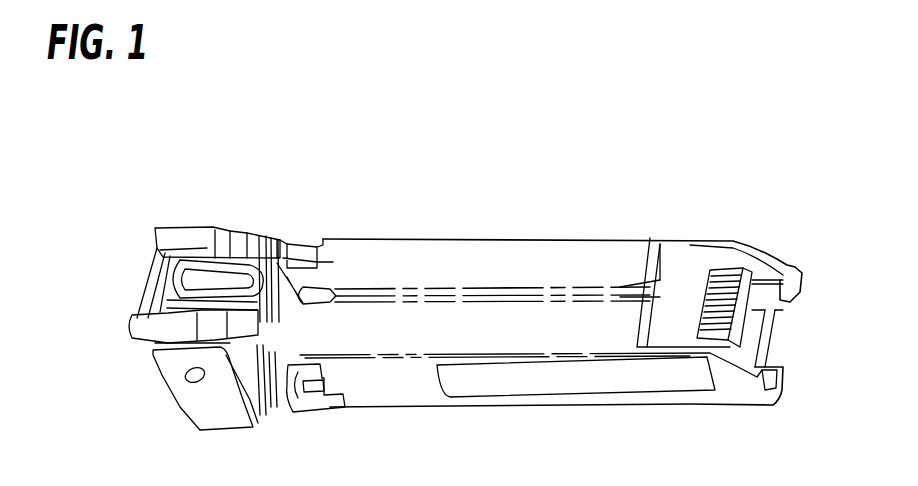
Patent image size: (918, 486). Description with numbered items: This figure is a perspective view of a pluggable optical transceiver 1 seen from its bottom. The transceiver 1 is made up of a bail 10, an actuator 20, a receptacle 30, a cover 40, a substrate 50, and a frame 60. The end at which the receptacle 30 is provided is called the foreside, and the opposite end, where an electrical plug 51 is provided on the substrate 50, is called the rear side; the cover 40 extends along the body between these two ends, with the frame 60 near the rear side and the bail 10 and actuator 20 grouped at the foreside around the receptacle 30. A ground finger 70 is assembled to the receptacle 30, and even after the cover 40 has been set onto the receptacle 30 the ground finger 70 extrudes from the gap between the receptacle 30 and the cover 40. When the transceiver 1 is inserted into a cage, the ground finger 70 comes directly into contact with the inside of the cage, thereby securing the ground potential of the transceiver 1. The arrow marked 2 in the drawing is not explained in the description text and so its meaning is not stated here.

The transceiver 1 is at (616, 190).
The release direction 2 is at (144, 377).
The bail 10 is at (203, 412).
The actuator 20 is at (186, 233).
The receptacle 30 is at (258, 395).
The cover 40 is at (487, 253).
The substrate 50 is at (673, 287).
The electrical plug 51 is at (735, 263).
The frame 60 is at (772, 303).
The ground finger 70 is at (308, 250).